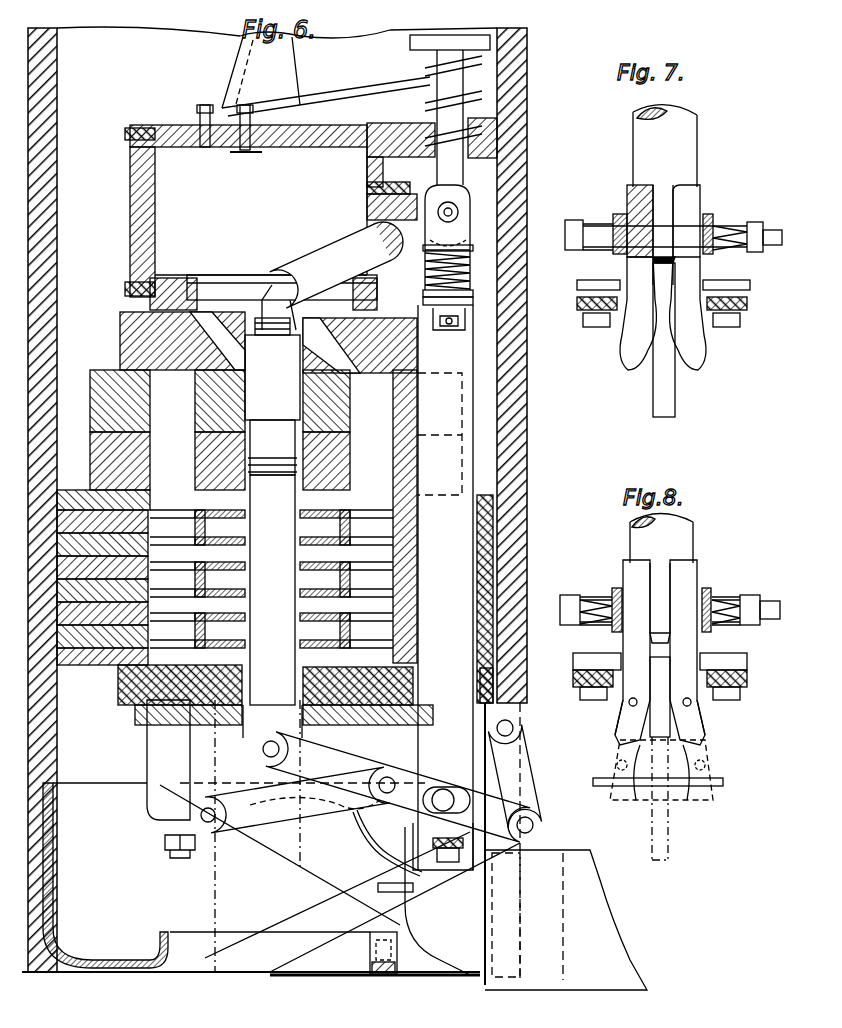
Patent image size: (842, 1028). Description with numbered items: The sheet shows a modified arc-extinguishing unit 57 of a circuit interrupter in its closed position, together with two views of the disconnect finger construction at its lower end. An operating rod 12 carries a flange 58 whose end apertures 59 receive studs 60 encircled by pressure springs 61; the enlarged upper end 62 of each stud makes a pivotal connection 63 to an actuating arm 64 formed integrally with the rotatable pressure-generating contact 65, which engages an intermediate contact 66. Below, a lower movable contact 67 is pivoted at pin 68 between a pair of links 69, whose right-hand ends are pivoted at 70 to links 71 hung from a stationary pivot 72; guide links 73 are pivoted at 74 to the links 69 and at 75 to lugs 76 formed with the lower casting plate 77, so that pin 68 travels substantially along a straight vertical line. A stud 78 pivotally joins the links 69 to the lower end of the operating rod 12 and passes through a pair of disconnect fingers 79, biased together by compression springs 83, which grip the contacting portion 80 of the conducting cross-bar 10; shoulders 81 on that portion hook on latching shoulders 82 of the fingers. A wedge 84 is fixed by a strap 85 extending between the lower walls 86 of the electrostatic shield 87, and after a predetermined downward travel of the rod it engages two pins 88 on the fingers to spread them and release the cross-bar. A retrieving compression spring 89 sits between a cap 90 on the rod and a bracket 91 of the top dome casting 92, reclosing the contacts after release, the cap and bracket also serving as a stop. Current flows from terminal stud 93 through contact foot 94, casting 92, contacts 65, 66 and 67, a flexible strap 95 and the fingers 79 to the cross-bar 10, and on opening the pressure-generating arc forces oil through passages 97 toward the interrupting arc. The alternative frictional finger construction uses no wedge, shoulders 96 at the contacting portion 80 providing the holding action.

In FIG. 6, the conducting cross-bar 10 is at (572, 852).
In FIG. 7, the conducting cross-bar 10 is at (676, 401).
In FIG. 8, the conducting cross-bar 10 is at (674, 796).
In FIG. 6, the operating rod 12 is at (493, 518).
In FIG. 7, the operating rod 12 is at (697, 143).
In FIG. 8, the operating rod 12 is at (695, 528).
In FIG. 6, the arc-extinguishing unit 57 is at (558, 450).
In FIG. 6, the flange 58 is at (470, 299).
In FIG. 6, the apertures 59 is at (490, 283).
In FIG. 6, the studs 60 is at (452, 330).
In FIG. 6, the pressure springs 61 is at (470, 268).
In FIG. 6, the enlarged upper end 62 is at (498, 237).
In FIG. 6, the pivotal connection 63 is at (458, 205).
In FIG. 6, the actuating arm 64 is at (412, 194).
In FIG. 6, the rotatable pressure-generating contact 65 is at (322, 250).
In FIG. 6, the intermediate contact 66 is at (282, 376).
In FIG. 6, the lower movable contact 67 is at (298, 605).
In FIG. 6, the pivot pin 68 is at (271, 741).
In FIG. 6, the links 69 is at (336, 755).
In FIG. 7, the links 69 is at (622, 185).
In FIG. 8, the links 69 is at (616, 588).
In FIG. 6, the pivotal connection 70 is at (534, 825).
In FIG. 6, the links 71 is at (535, 765).
In FIG. 6, the stationary pivot 72 is at (514, 727).
In FIG. 6, the guide links 73 is at (310, 812).
In FIG. 6, the pivotal connection 74 is at (389, 777).
In FIG. 6, the pivotal mounting 75 is at (212, 833).
In FIG. 6, the lugs 76 is at (186, 775).
In FIG. 6, the lower casting plate 77 is at (135, 718).
In FIG. 6, the stud 78 is at (443, 789).
In FIG. 7, the stud 78 is at (774, 228).
In FIG. 8, the stud 78 is at (772, 598).
In FIG. 6, the disconnect fingers 79 is at (456, 920).
In FIG. 7, the disconnect fingers 79 is at (622, 346).
In FIG. 8, the disconnect fingers 79 is at (616, 710).
In FIG. 7, the contacting portion 80 is at (673, 273).
In FIG. 8, the contacting portion 80 is at (672, 650).
In FIG. 8, the shoulders 81 is at (660, 649).
In FIG. 8, the latching shoulders 82 is at (659, 691).
In FIG. 7, the compression springs 83 is at (616, 215).
In FIG. 8, the compression springs 83 is at (580, 594).
In FIG. 6, the wedge 84 is at (370, 955).
In FIG. 8, the wedge 84 is at (690, 770).
In FIG. 6, the strap 85 is at (390, 978).
In FIG. 8, the strap 85 is at (724, 782).
In FIG. 6, the lower walls 86 is at (345, 978).
In FIG. 6, the electrostatic shield 87 is at (60, 905).
In FIG. 6, the pins 88 is at (375, 890).
In FIG. 8, the pins 88 is at (616, 738).
In FIG. 6, the retrieving compression spring 89 is at (480, 88).
In FIG. 6, the cap 90 is at (484, 50).
In FIG. 6, the bracket 91 is at (497, 133).
In FIG. 6, the top dome casting 92 is at (186, 125).
In FIG. 6, the terminal stud 93 is at (308, 100).
In FIG. 6, the contact foot 94 is at (240, 64).
In FIG. 6, the flexible strap 95 is at (368, 836).
In FIG. 7, the flexible strap 95 is at (577, 305).
In FIG. 8, the flexible strap 95 is at (573, 679).
In FIG. 7, the shoulders 96 is at (662, 241).
In FIG. 6, the passages 97 is at (178, 470).